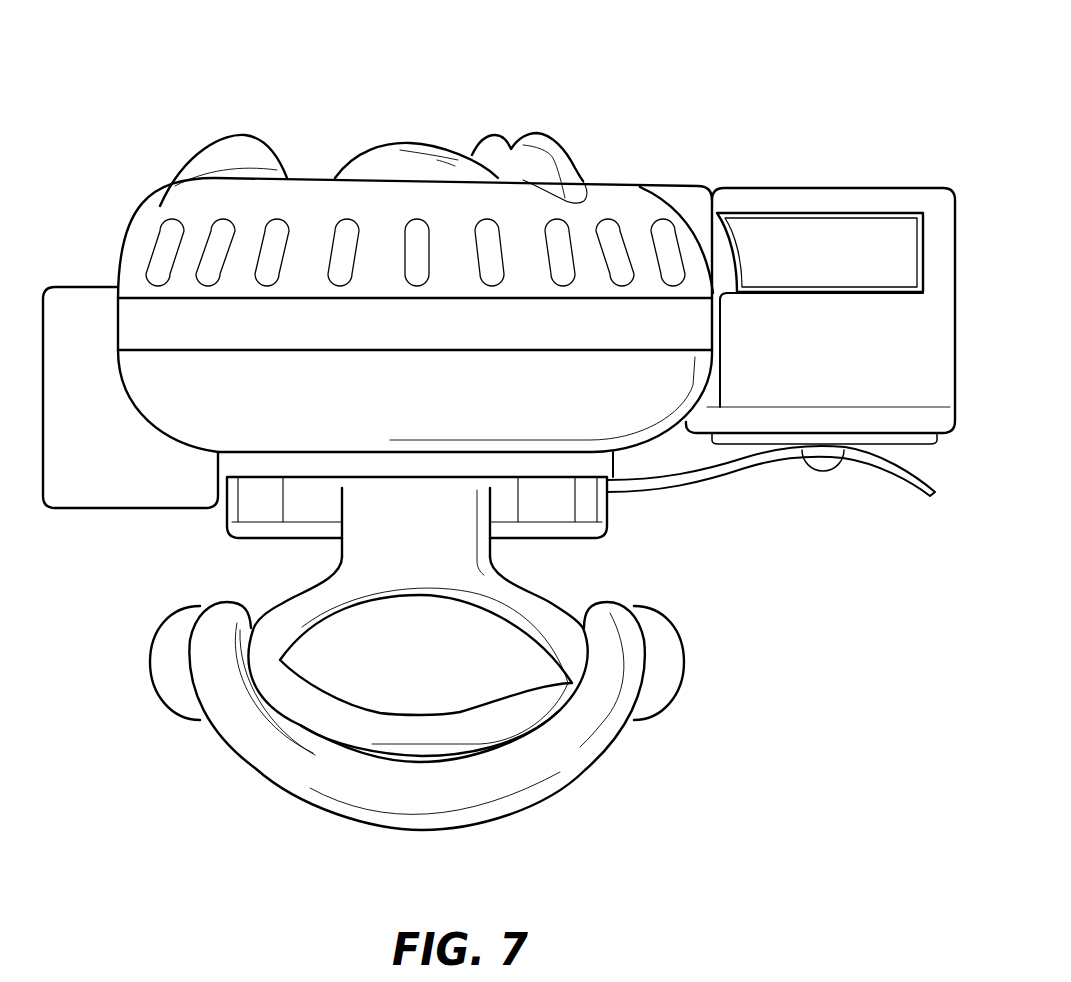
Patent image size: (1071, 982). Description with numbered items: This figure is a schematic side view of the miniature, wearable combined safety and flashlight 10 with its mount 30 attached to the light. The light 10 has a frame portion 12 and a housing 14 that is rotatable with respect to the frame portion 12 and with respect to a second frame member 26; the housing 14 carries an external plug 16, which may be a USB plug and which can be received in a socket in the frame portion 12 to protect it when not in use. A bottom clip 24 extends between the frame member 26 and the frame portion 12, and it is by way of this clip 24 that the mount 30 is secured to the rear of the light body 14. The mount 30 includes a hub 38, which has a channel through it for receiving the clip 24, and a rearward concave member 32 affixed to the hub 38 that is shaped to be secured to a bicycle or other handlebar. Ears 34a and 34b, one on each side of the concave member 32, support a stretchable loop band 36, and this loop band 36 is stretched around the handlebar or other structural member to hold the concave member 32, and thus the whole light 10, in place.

The combined safety and flashlight 10 is at (217, 90).
The frame portion 12 is at (758, 188).
The housing 14 is at (610, 197).
The external plug 16 is at (832, 247).
The bottom clip 24 is at (740, 472).
The frame member 26 is at (82, 310).
The mount 30 is at (265, 560).
The rearward concave member 32 is at (418, 560).
The ear 34a is at (165, 658).
The ear 34b is at (672, 657).
The stretchable loop band 36 is at (287, 772).
The hub 38 is at (558, 496).